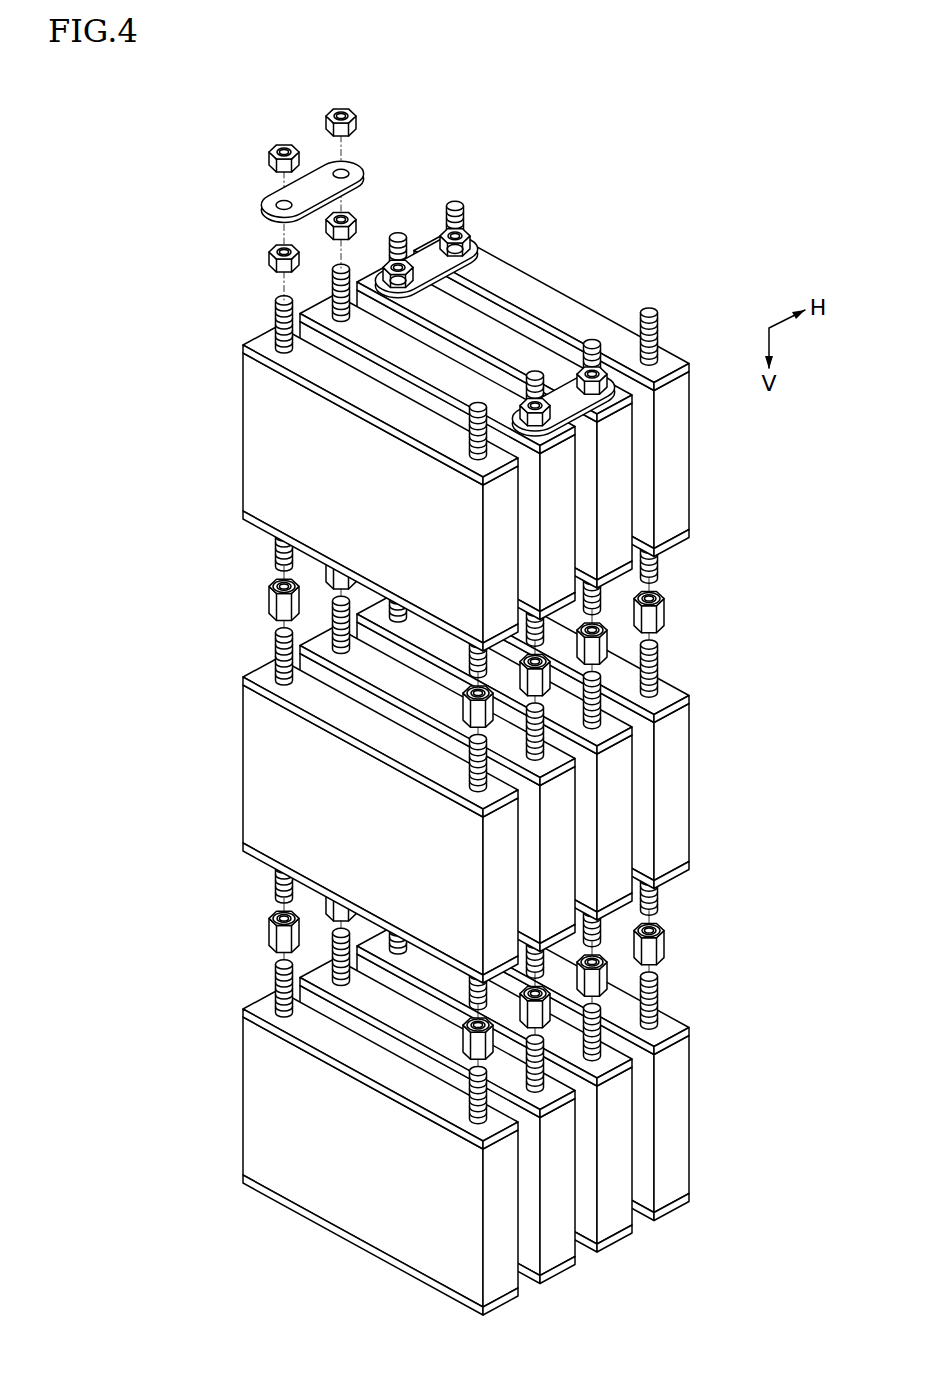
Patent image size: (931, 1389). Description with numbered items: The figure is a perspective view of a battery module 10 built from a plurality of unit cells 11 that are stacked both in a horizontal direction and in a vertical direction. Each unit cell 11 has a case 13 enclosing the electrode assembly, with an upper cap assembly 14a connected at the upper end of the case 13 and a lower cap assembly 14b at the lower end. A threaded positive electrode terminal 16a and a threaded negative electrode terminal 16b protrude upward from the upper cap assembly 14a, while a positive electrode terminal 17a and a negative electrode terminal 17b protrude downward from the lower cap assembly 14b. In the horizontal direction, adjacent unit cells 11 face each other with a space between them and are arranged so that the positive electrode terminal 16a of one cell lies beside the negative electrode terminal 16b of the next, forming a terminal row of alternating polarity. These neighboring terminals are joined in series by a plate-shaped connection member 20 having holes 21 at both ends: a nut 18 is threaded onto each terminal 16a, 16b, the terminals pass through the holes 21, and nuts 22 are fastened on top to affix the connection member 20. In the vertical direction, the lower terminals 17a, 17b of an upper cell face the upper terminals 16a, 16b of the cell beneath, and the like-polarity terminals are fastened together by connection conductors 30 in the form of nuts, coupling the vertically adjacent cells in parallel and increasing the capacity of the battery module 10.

The battery module 10 is at (473, 687).
The unit cell 11 is at (387, 551).
The case 13 is at (373, 368).
The upper cap assembly 14a is at (473, 325).
The lower cap assembly 14b is at (243, 521).
The positive electrode terminal 16a is at (275, 317).
The negative electrode terminal 16b is at (357, 281).
The positive electrode terminal 17a is at (277, 565).
The negative electrode terminal 17b is at (463, 668).
The nut 18 is at (268, 253).
The connection member 20 is at (318, 185).
The hole 21 is at (348, 173).
The nut 22 is at (338, 108).
The connection conductor 30 is at (268, 600).